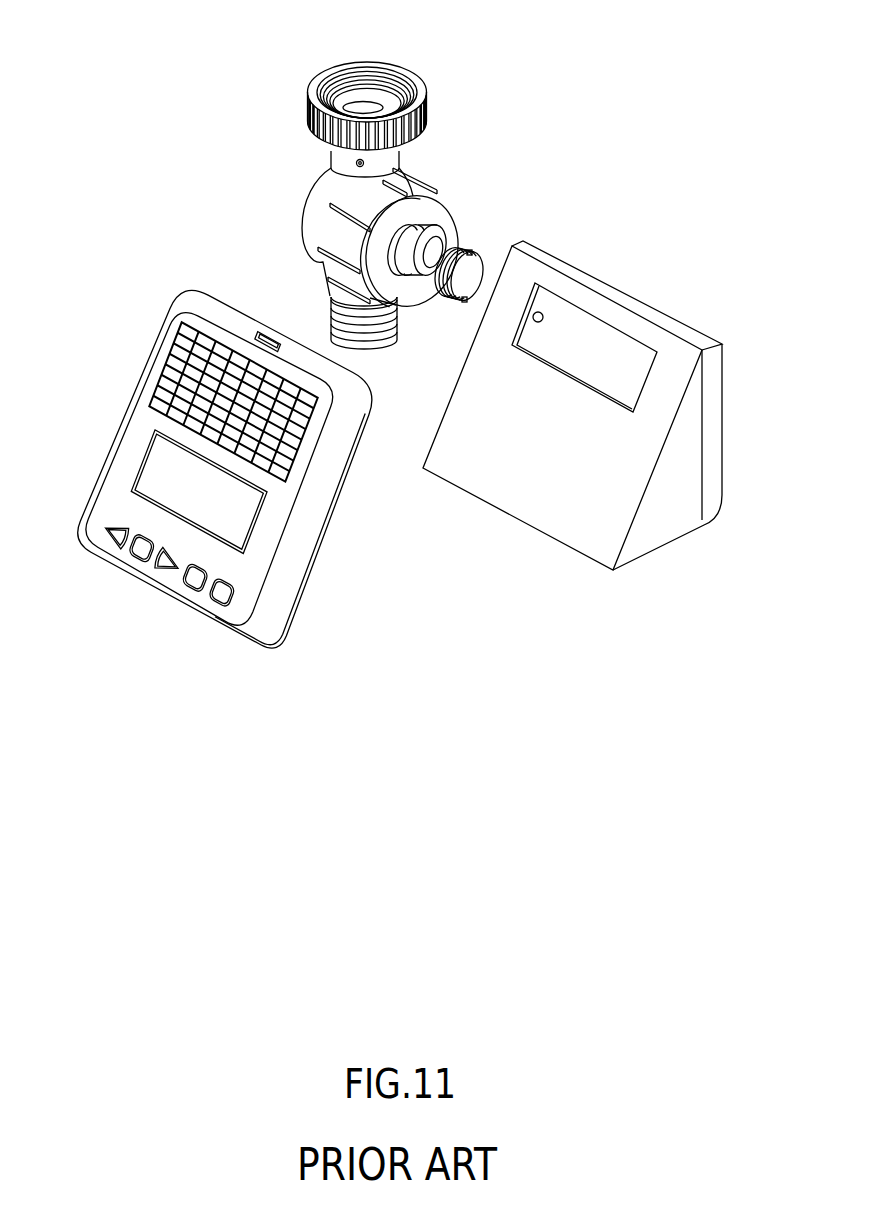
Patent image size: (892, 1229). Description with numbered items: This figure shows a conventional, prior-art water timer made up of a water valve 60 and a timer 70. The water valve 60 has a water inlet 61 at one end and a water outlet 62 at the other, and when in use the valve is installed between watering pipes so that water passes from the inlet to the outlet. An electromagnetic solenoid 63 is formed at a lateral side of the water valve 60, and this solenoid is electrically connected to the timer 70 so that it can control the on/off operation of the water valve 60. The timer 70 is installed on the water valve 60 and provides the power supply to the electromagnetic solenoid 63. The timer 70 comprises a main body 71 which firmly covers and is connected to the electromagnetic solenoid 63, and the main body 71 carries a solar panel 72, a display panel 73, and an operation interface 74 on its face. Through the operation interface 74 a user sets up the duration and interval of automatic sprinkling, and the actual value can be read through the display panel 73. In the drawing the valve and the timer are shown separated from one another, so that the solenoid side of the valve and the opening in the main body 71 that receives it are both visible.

The water valve 60 is at (300, 202).
The water inlet 61 is at (368, 108).
The water outlet 62 is at (371, 349).
The electromagnetic solenoid 63 is at (435, 253).
The timer 70 is at (673, 578).
The main body 71 is at (543, 518).
The solar panel 72 is at (180, 343).
The display panel 73 is at (160, 452).
The operation interface 74 is at (107, 534).